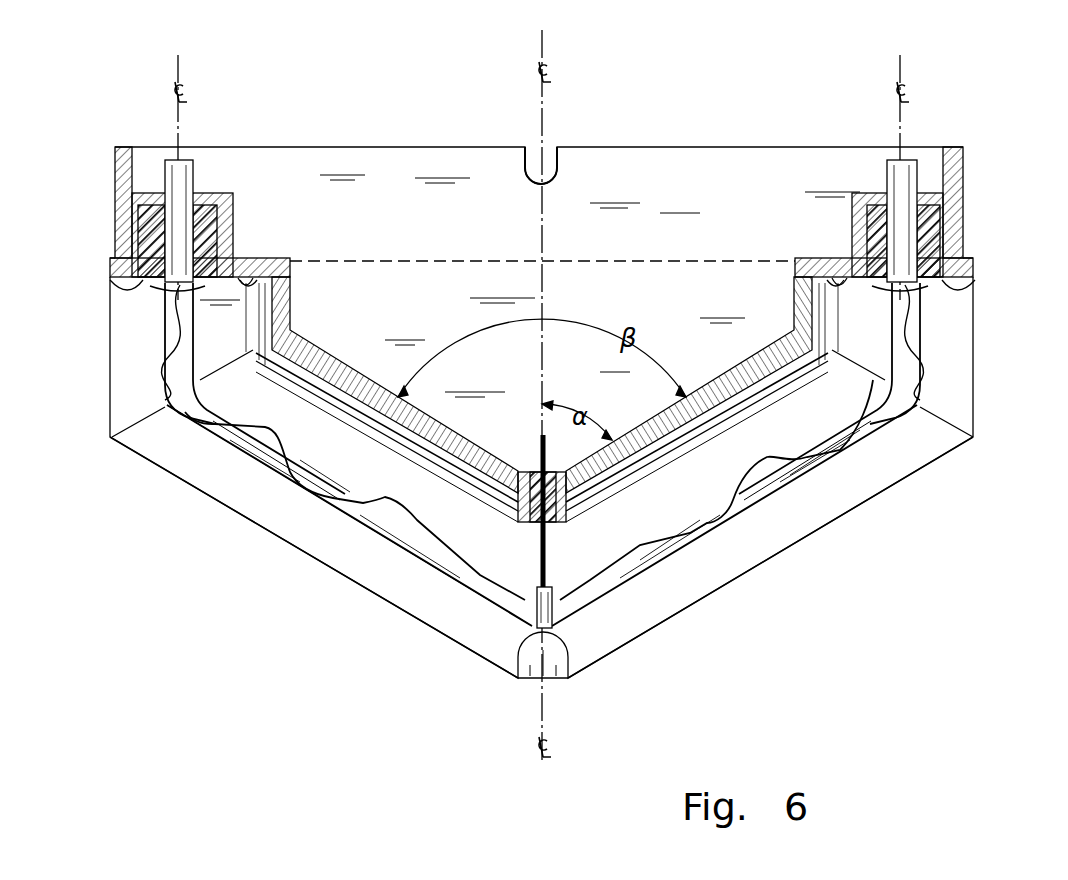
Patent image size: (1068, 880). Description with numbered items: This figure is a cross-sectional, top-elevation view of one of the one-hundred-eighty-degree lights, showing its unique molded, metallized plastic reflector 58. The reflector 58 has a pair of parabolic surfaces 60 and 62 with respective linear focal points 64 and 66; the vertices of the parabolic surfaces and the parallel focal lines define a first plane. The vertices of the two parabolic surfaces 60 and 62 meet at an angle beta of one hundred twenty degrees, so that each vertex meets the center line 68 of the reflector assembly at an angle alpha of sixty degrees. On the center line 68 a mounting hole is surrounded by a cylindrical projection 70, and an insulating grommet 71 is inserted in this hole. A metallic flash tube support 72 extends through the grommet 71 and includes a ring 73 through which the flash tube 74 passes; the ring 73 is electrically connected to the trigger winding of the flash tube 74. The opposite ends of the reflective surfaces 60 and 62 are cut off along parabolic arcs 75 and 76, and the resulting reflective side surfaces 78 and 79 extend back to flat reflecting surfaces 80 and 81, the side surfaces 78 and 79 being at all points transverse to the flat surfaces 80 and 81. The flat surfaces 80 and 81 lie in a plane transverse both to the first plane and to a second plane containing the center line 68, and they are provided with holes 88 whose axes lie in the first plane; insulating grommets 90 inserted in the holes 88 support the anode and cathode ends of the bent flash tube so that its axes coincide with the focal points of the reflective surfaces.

The reflector 58 is at (312, 630).
The parabolic surface 60 is at (378, 410).
The parabolic surface 62 is at (697, 413).
The linear focal point 64 is at (462, 575).
The linear focal point 66 is at (712, 513).
The center line 68 is at (541, 112).
The cylindrical projection 70 is at (570, 510).
The insulating grommet 71 is at (535, 524).
The flash tube support 72 is at (552, 552).
The ring 73 is at (555, 628).
The flash tube 74 is at (340, 505).
The parabolic arc 75 is at (130, 408).
The parabolic arc 76 is at (940, 417).
The reflective side surface 78 is at (266, 312).
The reflective side surface 79 is at (818, 325).
The flat reflecting surface 80 is at (252, 275).
The flat reflecting surface 81 is at (828, 272).
The hole 88 is at (957, 243).
The insulating grommet 90 is at (150, 291).